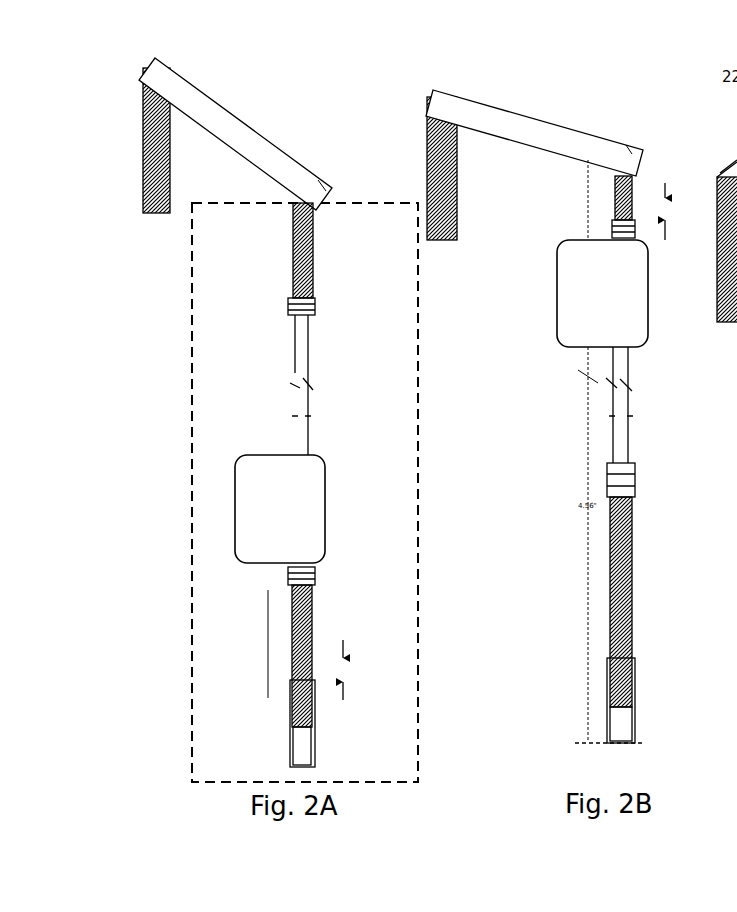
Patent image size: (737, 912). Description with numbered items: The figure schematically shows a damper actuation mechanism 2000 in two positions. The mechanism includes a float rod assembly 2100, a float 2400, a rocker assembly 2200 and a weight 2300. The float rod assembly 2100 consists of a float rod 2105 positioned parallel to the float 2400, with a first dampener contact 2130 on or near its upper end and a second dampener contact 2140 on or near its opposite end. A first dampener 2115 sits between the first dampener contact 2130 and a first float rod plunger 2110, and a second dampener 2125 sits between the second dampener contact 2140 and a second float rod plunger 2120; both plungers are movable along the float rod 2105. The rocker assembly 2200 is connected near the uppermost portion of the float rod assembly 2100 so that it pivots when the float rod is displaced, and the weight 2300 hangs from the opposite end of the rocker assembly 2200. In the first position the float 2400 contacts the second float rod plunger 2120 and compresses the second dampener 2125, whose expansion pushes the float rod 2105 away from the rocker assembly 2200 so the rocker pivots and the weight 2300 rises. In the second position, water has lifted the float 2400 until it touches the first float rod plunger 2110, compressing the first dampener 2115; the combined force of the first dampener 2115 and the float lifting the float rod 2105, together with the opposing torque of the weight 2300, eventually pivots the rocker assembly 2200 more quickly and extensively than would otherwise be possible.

In FIG. 2A, the damper actuation mechanism 2000 is at (160, 428).
In FIG. 2A, the float rod assembly 2100 is at (418, 392).
In FIG. 2A, the float rod 2105 is at (306, 366).
In FIG. 2B, the float rod 2105 is at (622, 368).
In FIG. 2A, the first float rod plunger 2110 is at (316, 305).
In FIG. 2B, the first float rod plunger 2110 is at (635, 232).
In FIG. 2A, the first dampener 2115 is at (318, 242).
In FIG. 2B, the first dampener 2115 is at (632, 184).
In FIG. 2A, the second float rod plunger 2120 is at (316, 582).
In FIG. 2B, the second float rod plunger 2120 is at (622, 474).
In FIG. 2A, the second dampener 2125 is at (312, 632).
In FIG. 2B, the second dampener 2125 is at (632, 596).
In FIG. 2A, the first dampener contact 2130 is at (318, 180).
In FIG. 2B, the first dampener contact 2130 is at (627, 146).
In FIG. 2A, the second dampener contact 2140 is at (312, 750).
In FIG. 2B, the second dampener contact 2140 is at (636, 726).
In FIG. 2A, the rocker assembly 2200 is at (230, 122).
In FIG. 2B, the rocker assembly 2200 is at (543, 128).
In FIG. 2A, the weight 2300 is at (159, 213).
In FIG. 2A, the float 2400 is at (325, 524).
In FIG. 2B, the float 2400 is at (603, 275).